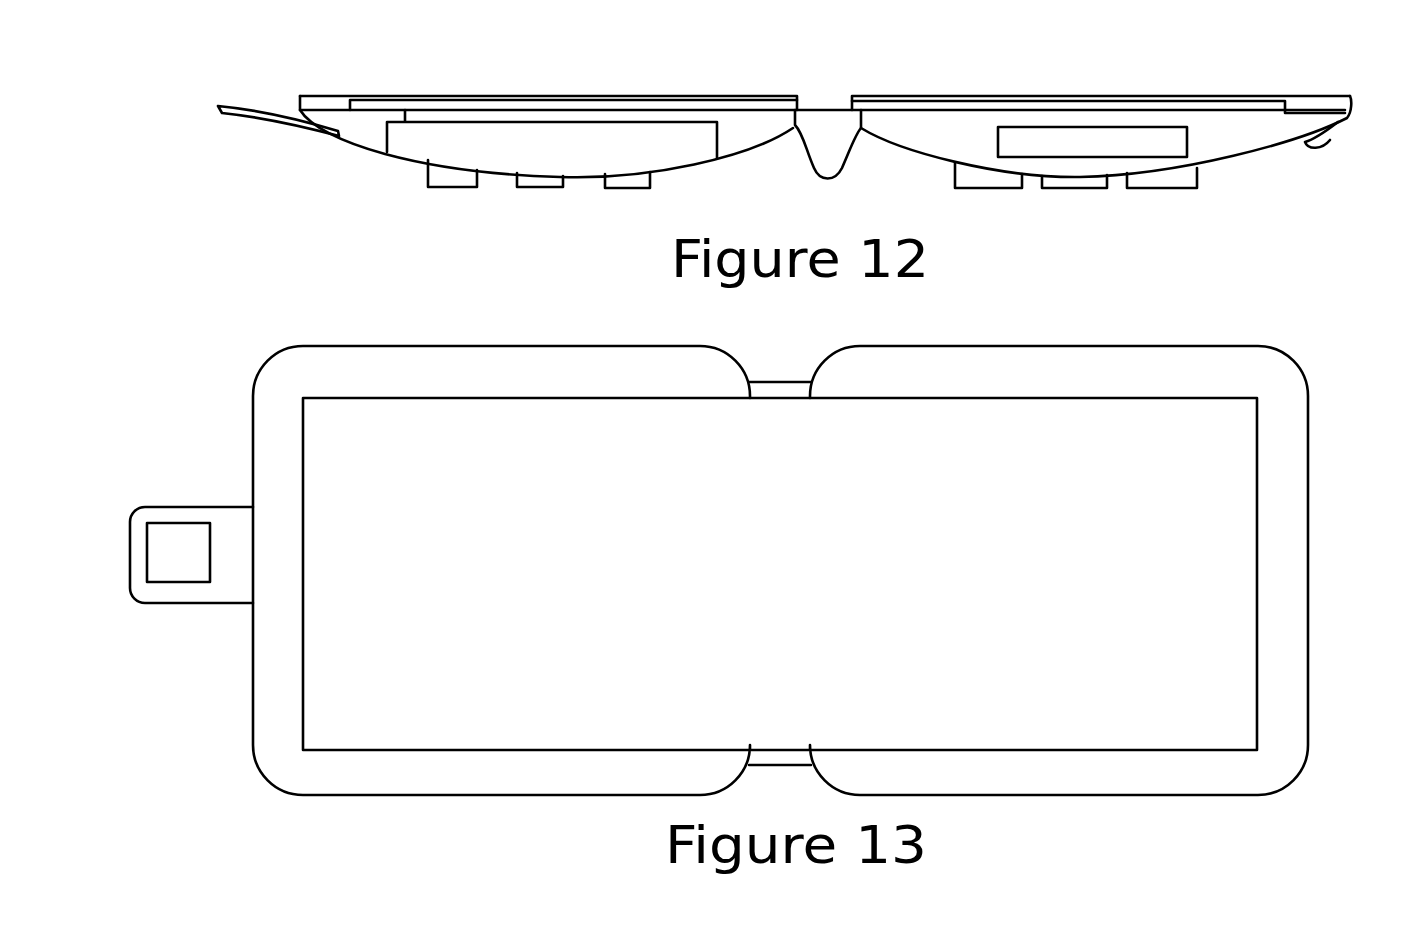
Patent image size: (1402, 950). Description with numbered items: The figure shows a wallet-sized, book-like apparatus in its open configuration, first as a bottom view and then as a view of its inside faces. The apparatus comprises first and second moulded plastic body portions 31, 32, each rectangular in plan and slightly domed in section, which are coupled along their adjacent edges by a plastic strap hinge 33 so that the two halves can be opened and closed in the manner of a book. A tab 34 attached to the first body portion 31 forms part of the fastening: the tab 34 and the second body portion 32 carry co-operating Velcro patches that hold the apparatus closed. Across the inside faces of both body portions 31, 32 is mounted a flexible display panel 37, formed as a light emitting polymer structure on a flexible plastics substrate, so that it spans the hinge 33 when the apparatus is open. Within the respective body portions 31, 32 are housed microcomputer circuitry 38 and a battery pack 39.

In FIG. 12, the first body portion 31 is at (363, 150).
In FIG. 13, the first body portion 31 is at (270, 658).
In FIG. 12, the second body portion 32 is at (1327, 142).
In FIG. 13, the second body portion 32 is at (1278, 607).
In FIG. 12, the strap hinge 33 is at (856, 157).
In FIG. 13, the strap hinge 33 is at (777, 760).
In FIG. 12, the tab 34 is at (256, 122).
In FIG. 13, the tab 34 is at (168, 517).
In FIG. 12, the flexible display panel 37 is at (825, 108).
In FIG. 13, the flexible display panel 37 is at (323, 420).
In FIG. 12, the microcomputer circuitry 38 is at (500, 153).
In FIG. 12, the battery pack 39 is at (1083, 140).